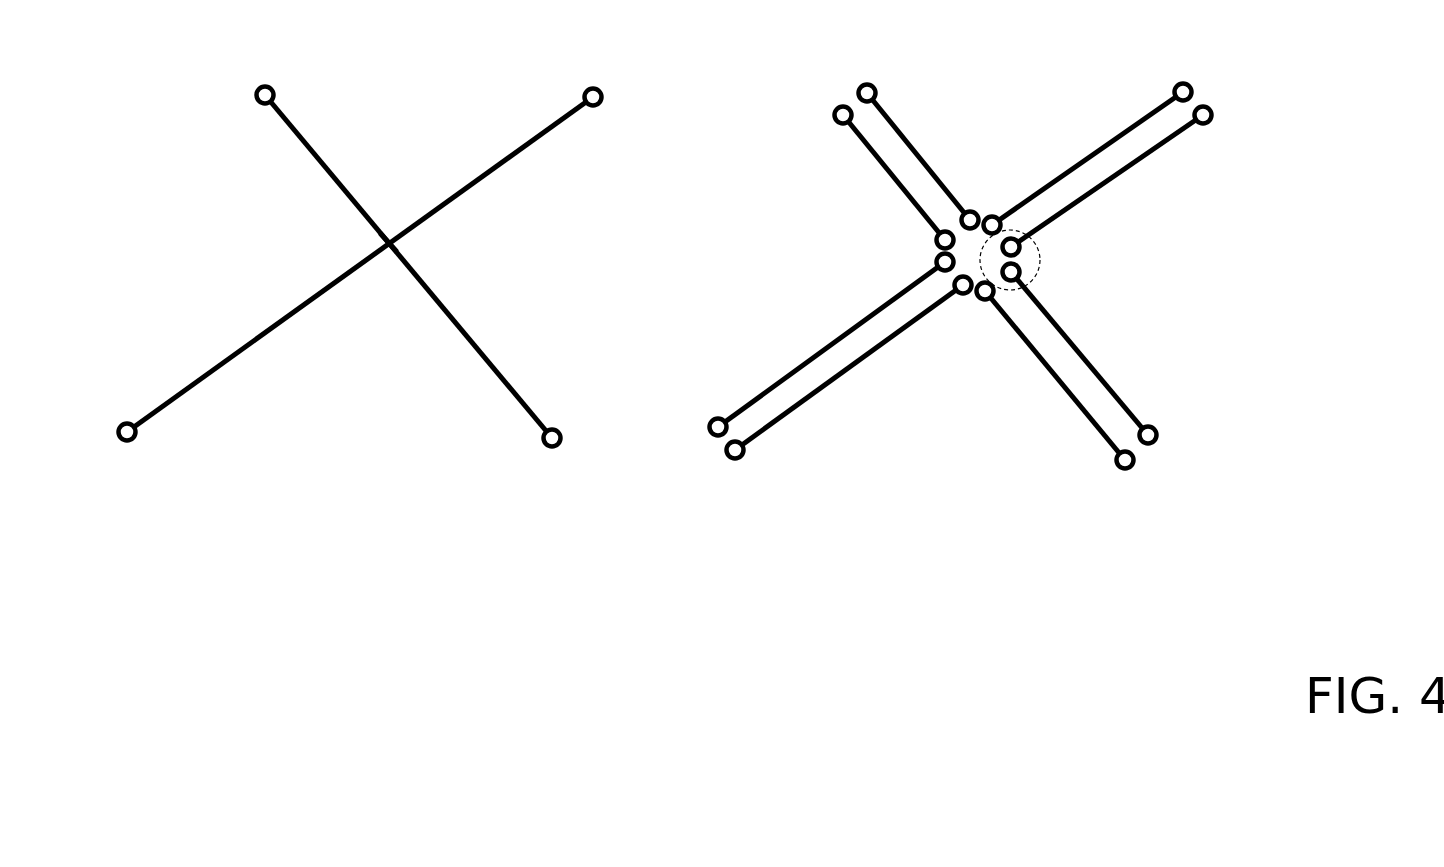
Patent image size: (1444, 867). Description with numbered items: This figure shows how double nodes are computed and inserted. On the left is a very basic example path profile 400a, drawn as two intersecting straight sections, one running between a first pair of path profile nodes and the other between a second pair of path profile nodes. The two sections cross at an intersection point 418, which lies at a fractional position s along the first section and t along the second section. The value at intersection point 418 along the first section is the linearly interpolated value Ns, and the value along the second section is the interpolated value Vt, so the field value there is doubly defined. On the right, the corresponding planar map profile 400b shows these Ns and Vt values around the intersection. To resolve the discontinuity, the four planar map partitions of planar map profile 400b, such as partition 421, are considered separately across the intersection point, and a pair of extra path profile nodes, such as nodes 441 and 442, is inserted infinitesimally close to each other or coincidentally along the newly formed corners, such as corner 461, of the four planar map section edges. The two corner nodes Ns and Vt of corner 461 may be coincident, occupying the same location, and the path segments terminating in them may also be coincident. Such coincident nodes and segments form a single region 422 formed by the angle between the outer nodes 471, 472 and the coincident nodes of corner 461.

The path profile 400a is at (361, 285).
The planar map profile 400b is at (1030, 284).
The intersection point 418 is at (280, 228).
The partition 421 is at (1026, 381).
The region 422 is at (1185, 166).
The node 441 is at (867, 242).
The node 442 is at (990, 217).
The corner 461 is at (1095, 262).
The node 471 is at (1105, 245).
The node 472 is at (1154, 388).